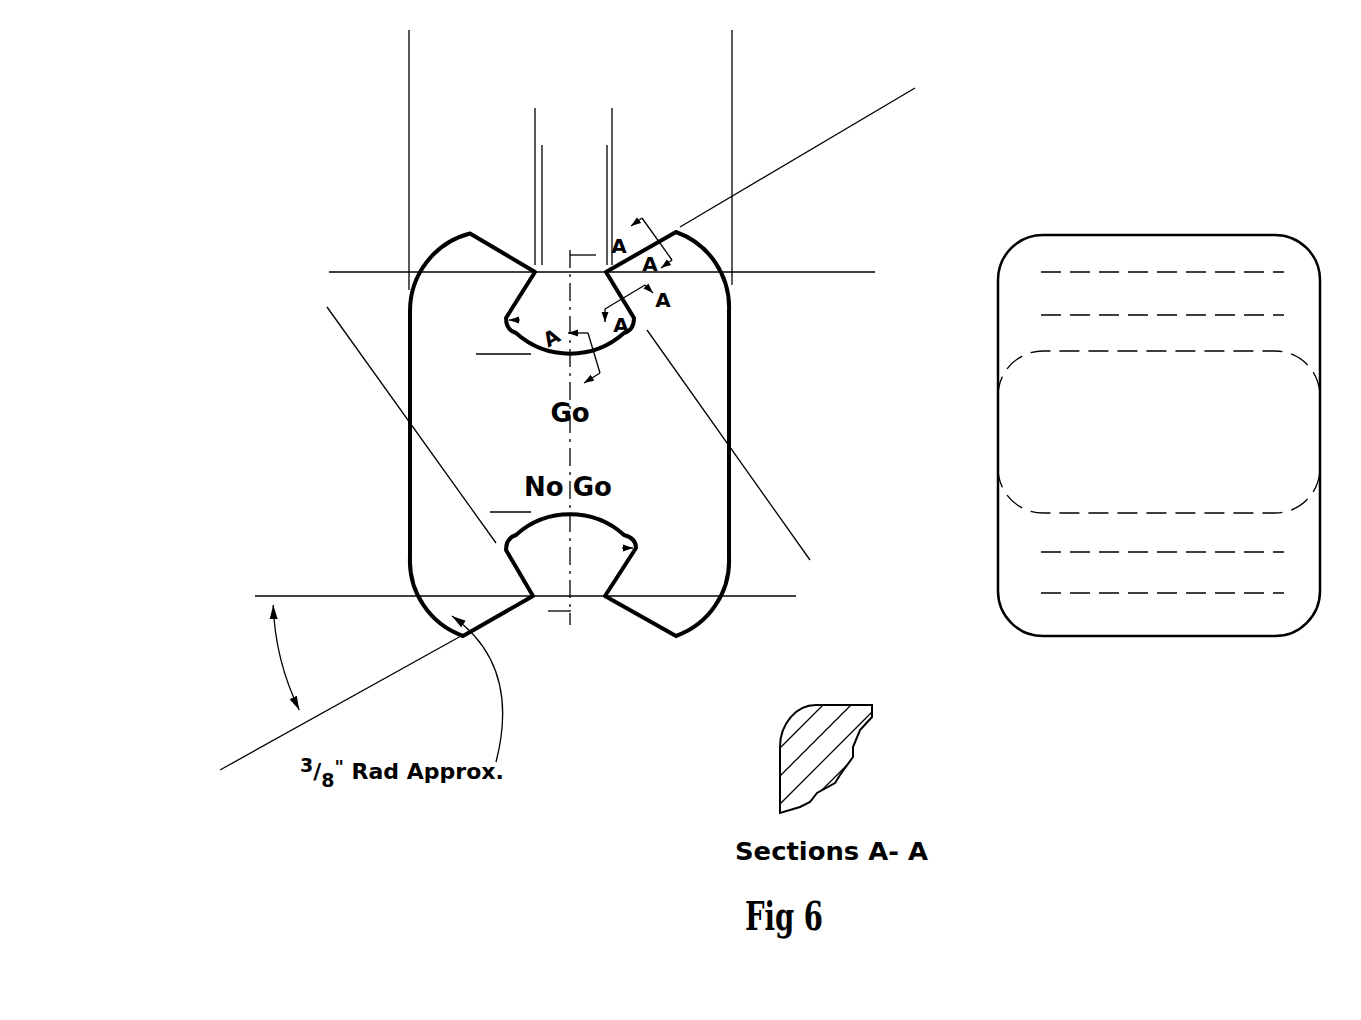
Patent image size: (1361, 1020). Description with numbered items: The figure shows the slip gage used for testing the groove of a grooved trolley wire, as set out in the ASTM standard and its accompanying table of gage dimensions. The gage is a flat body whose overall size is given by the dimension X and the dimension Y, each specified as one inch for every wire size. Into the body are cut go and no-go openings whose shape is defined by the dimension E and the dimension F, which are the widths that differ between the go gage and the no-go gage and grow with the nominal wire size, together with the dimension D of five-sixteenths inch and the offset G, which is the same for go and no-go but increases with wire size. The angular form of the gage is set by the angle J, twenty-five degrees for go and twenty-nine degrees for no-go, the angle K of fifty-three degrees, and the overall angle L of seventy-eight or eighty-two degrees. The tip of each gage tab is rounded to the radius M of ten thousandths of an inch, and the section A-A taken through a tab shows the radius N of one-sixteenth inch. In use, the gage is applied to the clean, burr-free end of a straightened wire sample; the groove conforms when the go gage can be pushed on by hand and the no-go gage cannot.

The gage dimension X is at (409, 44).
The gage dimension E is at (612, 118).
The gage dimension F is at (607, 162).
The gage dimension G is at (587, 297).
The gage dimension D is at (570, 255).
The section A- A is at (500, 354).
The gage radius M is at (527, 273).
The gage angle J is at (829, 148).
The gage angle K is at (862, 285).
The gage angle L is at (903, 107).
The gage radius N is at (839, 752).
The gage dimension Y is at (995, 612).